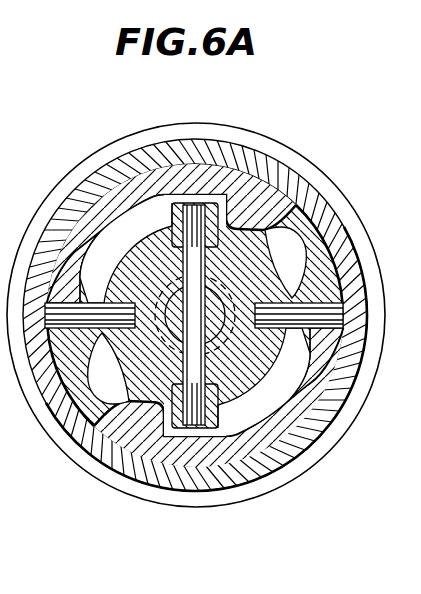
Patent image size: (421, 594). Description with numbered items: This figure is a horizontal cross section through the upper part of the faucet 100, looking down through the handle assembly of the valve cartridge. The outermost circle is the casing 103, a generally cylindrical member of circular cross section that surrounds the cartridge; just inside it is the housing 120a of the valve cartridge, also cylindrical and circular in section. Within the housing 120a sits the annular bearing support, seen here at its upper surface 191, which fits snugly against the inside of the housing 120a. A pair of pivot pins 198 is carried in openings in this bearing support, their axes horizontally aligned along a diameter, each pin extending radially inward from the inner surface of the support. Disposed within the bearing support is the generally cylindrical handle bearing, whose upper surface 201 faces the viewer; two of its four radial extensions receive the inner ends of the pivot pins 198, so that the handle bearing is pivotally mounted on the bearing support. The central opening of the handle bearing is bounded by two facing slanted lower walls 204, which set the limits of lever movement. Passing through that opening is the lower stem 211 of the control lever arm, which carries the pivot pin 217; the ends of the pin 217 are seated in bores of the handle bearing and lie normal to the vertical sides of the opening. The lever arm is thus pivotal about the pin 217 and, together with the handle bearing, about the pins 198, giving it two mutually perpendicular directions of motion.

The faucet 100 is at (0, 108).
The casing 103 is at (255, 136).
The housing 120a is at (278, 163).
The upper surface 191 is at (116, 435).
The pivot pins 198 is at (321, 331).
The upper surface 201 is at (257, 372).
The lower walls 204 is at (38, 203).
The lower stem 211 is at (210, 300).
The pivot pin 217 is at (199, 240).